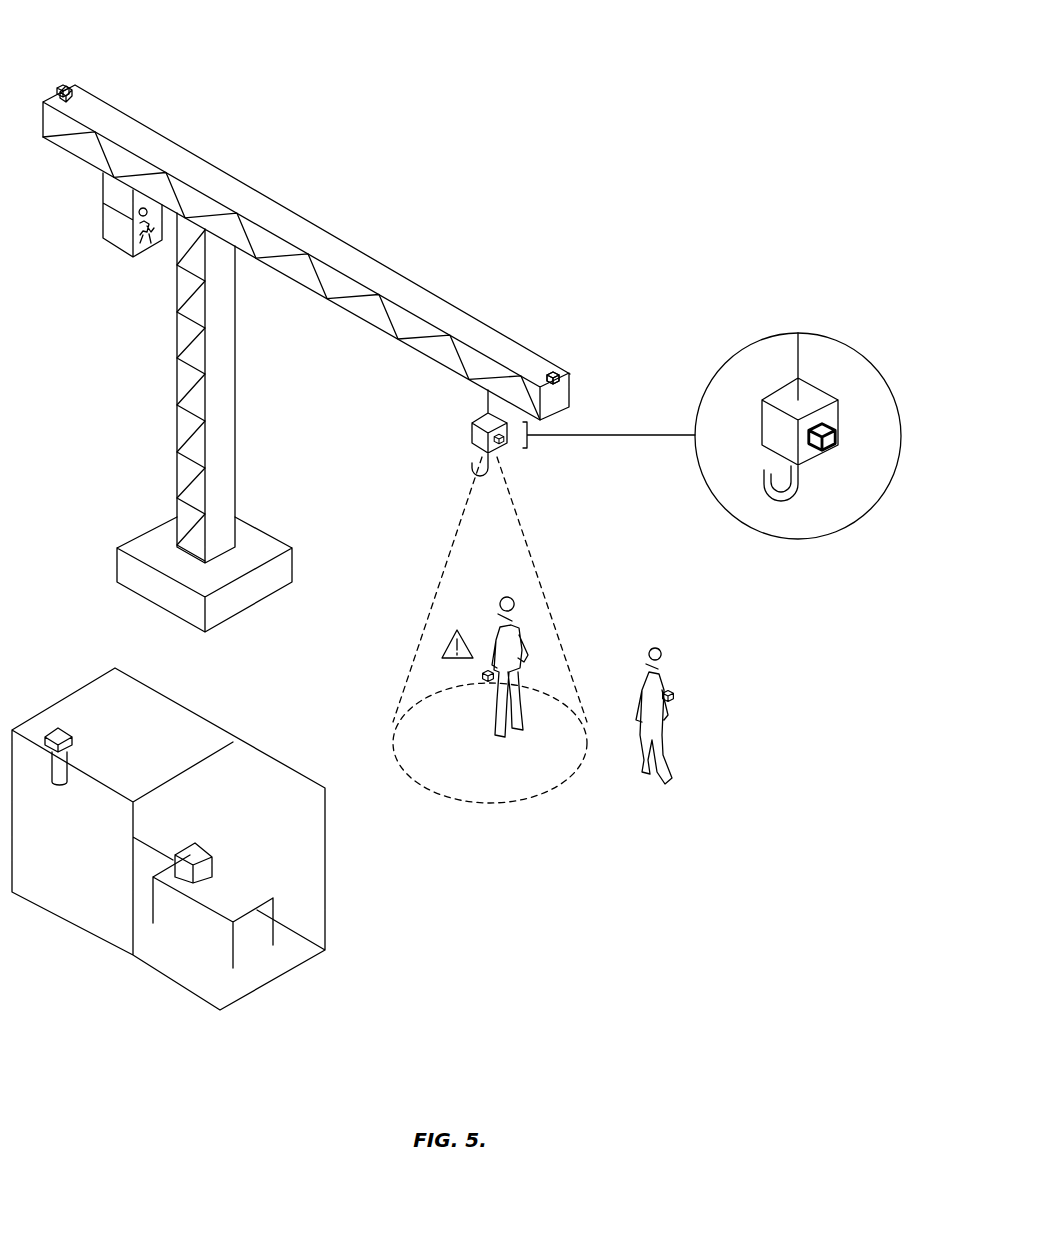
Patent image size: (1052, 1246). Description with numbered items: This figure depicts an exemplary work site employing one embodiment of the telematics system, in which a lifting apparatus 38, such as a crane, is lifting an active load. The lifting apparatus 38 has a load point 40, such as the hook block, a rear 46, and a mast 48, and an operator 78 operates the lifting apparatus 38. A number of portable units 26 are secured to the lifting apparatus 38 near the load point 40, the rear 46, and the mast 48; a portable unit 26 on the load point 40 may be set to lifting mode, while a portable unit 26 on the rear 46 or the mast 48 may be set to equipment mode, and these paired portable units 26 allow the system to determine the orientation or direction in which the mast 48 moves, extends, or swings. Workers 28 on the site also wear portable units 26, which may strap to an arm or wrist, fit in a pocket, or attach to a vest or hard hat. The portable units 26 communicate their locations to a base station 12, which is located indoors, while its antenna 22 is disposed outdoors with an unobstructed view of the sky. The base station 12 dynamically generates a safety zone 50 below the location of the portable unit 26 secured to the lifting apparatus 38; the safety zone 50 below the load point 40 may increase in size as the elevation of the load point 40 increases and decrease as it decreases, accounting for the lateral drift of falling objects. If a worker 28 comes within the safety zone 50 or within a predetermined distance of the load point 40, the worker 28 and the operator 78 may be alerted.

The base station 12 is at (185, 870).
The antenna 22 is at (60, 730).
The portable unit 26 is at (64, 97).
The worker 28 is at (527, 625).
The lifting apparatus 38 is at (147, 402).
The load point 40 is at (453, 440).
The rear 46 is at (77, 85).
The mast 48 is at (553, 366).
The safety zone 50 is at (473, 808).
The operator 78 is at (118, 257).